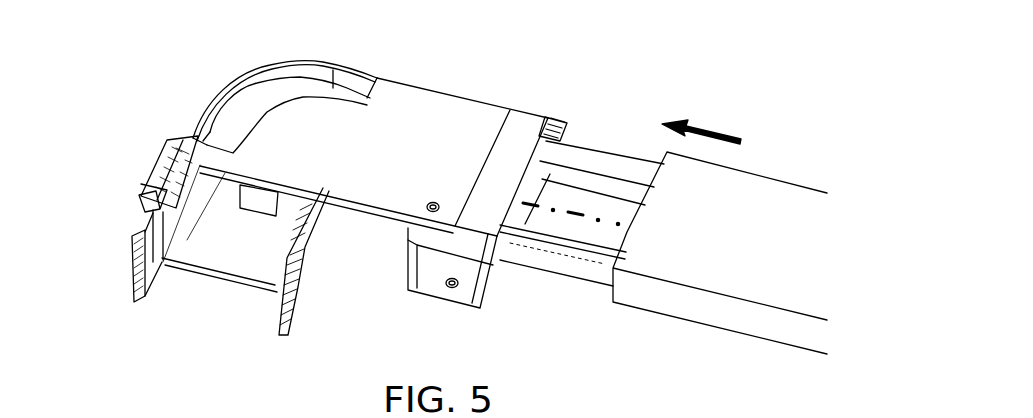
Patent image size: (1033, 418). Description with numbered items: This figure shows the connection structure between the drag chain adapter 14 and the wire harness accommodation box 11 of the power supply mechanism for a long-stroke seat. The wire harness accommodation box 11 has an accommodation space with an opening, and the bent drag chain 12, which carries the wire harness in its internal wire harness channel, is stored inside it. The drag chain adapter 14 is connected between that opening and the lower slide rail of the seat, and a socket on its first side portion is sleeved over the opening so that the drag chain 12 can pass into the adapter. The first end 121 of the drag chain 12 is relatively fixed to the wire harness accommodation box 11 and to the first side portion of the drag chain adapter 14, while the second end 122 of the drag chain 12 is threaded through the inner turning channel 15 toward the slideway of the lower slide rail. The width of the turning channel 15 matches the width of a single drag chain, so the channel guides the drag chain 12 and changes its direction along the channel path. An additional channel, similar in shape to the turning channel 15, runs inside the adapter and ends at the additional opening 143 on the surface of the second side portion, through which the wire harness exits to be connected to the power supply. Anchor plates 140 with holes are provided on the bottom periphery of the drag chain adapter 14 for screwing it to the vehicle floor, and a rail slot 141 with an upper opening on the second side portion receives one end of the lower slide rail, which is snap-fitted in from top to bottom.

The wire harness accommodation box 11 is at (773, 203).
The drag chain 12 is at (598, 160).
The first end of the drag chain 121 is at (527, 258).
The second end of the drag chain 122 is at (192, 212).
The drag chain adapter 14 is at (425, 110).
The anchor plate 140 is at (465, 293).
The rail slot 141 is at (137, 237).
The additional opening 143 is at (340, 215).
The turning channel 15 is at (258, 88).